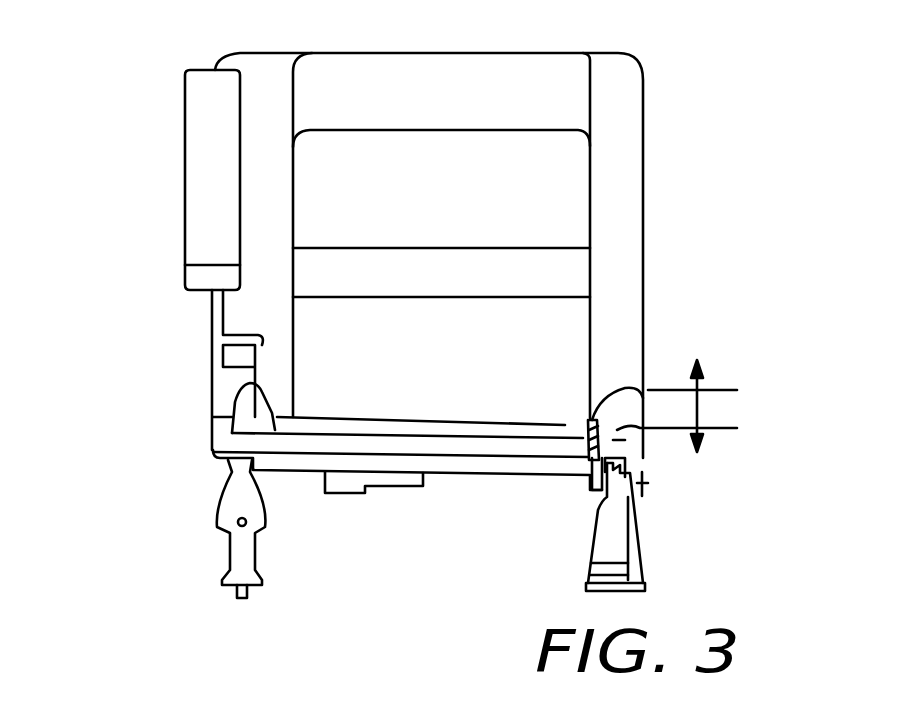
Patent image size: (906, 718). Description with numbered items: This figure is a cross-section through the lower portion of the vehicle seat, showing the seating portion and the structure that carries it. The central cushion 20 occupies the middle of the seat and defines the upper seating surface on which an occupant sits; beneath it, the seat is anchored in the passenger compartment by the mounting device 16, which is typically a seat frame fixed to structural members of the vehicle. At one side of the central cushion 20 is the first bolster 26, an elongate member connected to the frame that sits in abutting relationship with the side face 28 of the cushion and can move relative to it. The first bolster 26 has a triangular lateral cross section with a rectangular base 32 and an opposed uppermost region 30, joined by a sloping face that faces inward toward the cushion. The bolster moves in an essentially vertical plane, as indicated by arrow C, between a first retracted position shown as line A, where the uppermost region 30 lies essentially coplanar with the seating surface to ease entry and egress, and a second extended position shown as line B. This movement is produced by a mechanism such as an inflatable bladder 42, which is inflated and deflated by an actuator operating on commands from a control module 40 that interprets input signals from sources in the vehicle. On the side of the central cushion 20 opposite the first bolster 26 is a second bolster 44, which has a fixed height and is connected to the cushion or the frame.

The mounting device 16 is at (643, 548).
The central cushion 20 is at (427, 418).
The first bolster 26 is at (636, 466).
The side face 28 is at (592, 432).
The uppermost region 30 is at (637, 385).
The rectangular base 32 is at (644, 483).
The control module 40 is at (563, 465).
The bladder 42 is at (253, 407).
The second bolster 44 is at (250, 390).
The first retracted position A is at (688, 428).
The second extended position B is at (704, 390).
The arrow of bolster movement C is at (705, 368).